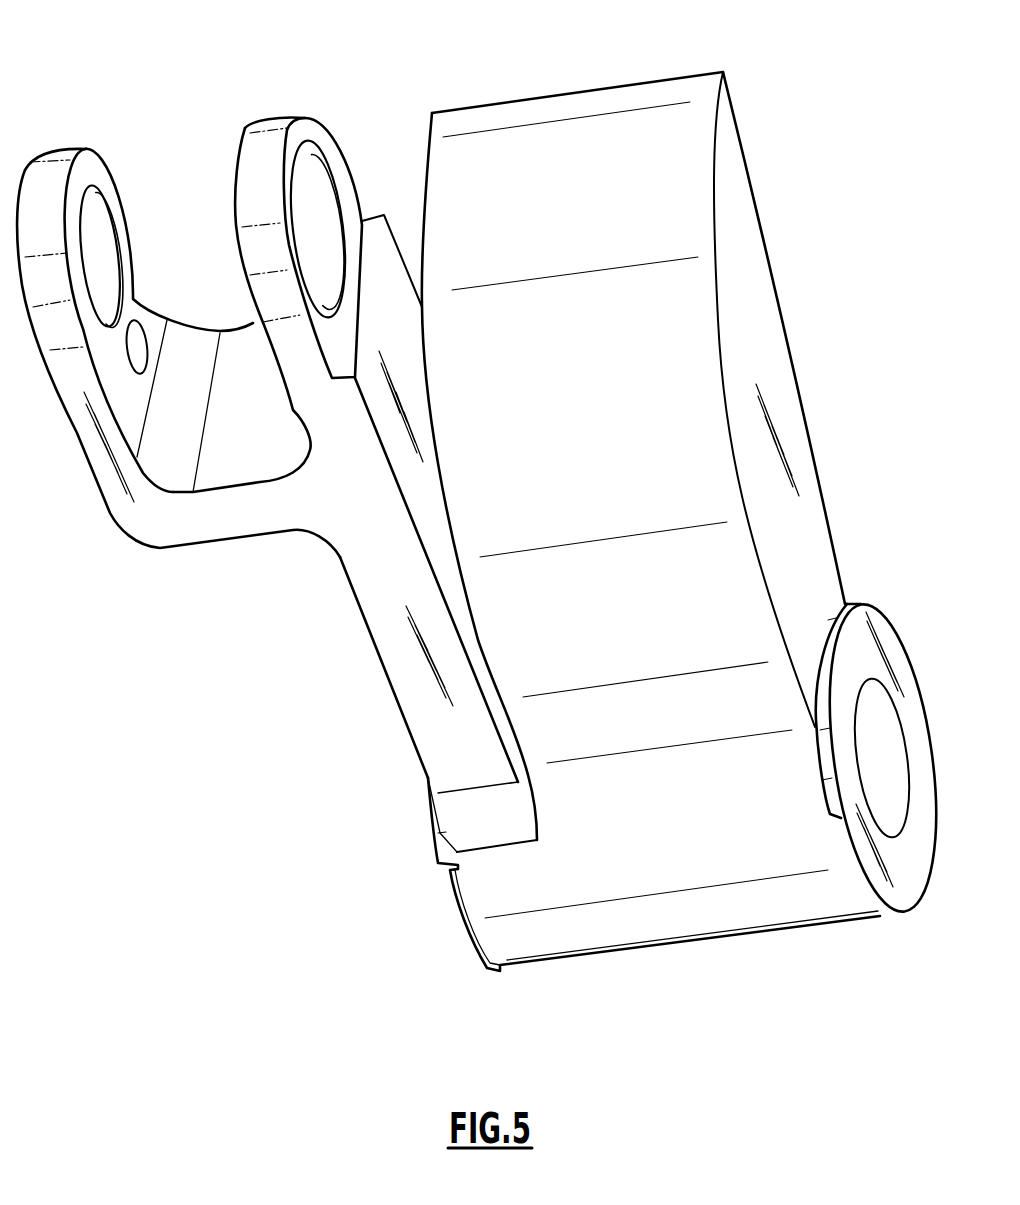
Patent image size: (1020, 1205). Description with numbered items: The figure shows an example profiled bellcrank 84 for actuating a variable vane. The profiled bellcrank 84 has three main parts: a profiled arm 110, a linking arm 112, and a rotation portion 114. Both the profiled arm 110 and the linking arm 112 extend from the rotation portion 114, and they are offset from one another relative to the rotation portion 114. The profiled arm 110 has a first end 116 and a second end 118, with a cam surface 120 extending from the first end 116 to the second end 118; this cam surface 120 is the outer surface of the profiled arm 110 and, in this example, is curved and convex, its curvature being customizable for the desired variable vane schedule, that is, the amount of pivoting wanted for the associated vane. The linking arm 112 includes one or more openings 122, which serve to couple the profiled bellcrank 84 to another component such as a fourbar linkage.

The profiled bellcrank 84 is at (205, 910).
The profiled arm 110 is at (818, 288).
The linking arm 112 is at (318, 630).
The rotation portion 114 is at (643, 960).
The first end 116 is at (857, 582).
The second end 118 is at (752, 72).
The cam surface 120 is at (648, 342).
The openings 122 is at (308, 227).